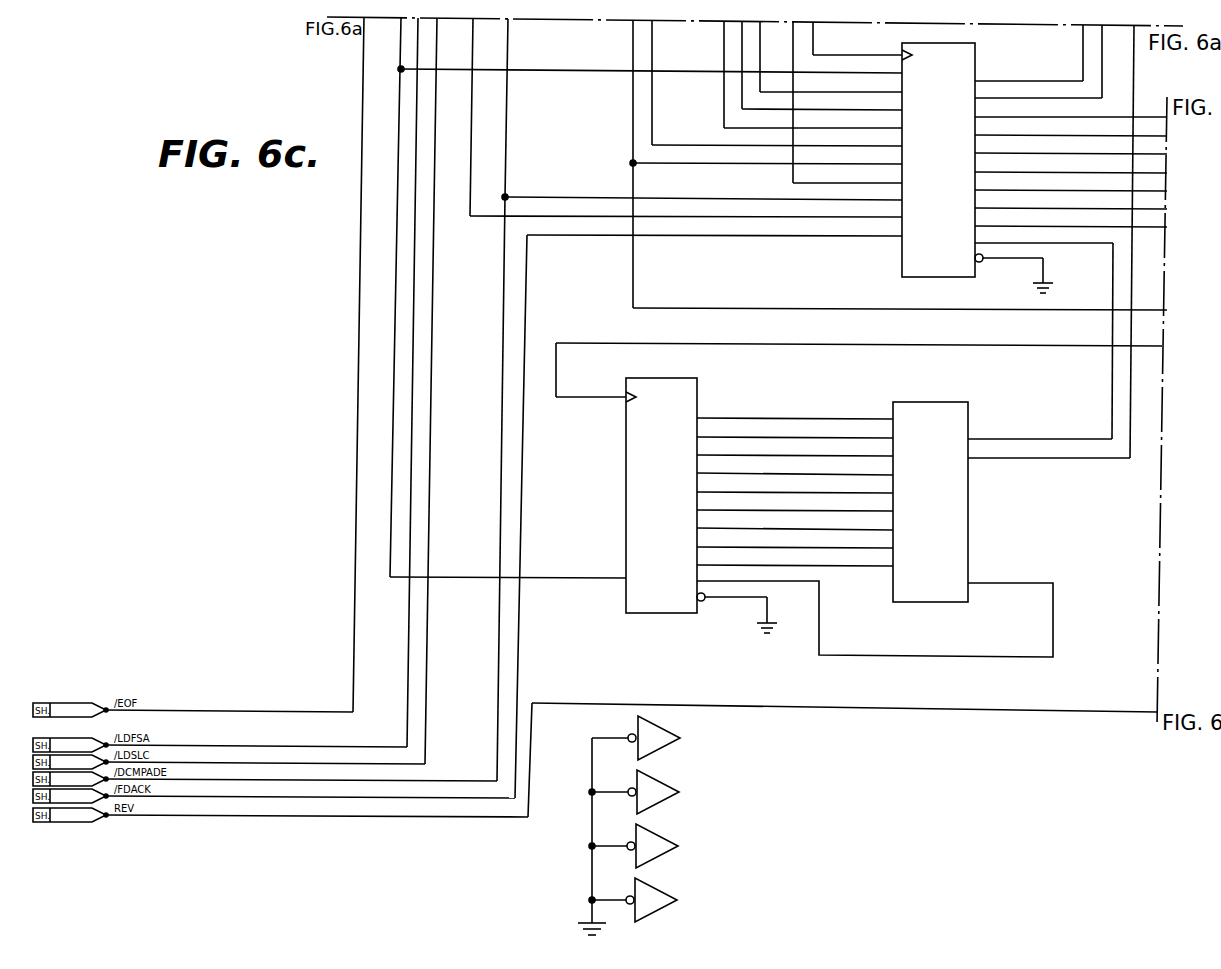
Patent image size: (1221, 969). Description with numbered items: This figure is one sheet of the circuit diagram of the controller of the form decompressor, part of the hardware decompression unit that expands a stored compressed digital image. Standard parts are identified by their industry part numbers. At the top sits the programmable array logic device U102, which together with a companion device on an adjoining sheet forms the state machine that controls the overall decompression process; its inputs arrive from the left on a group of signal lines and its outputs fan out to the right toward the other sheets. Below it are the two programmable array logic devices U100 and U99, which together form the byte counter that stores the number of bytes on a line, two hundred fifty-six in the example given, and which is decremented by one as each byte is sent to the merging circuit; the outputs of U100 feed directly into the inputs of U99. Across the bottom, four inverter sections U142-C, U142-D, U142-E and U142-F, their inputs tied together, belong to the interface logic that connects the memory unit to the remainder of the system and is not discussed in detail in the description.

The state machine PAL U102 is at (994, 232).
The byte counter PAL U100 is at (670, 529).
The byte counter PAL U99 is at (967, 494).
The inverter U142-C is at (663, 738).
The inverter U142-D is at (663, 792).
The inverter U142-E is at (662, 846).
The inverter U142-F is at (661, 900).